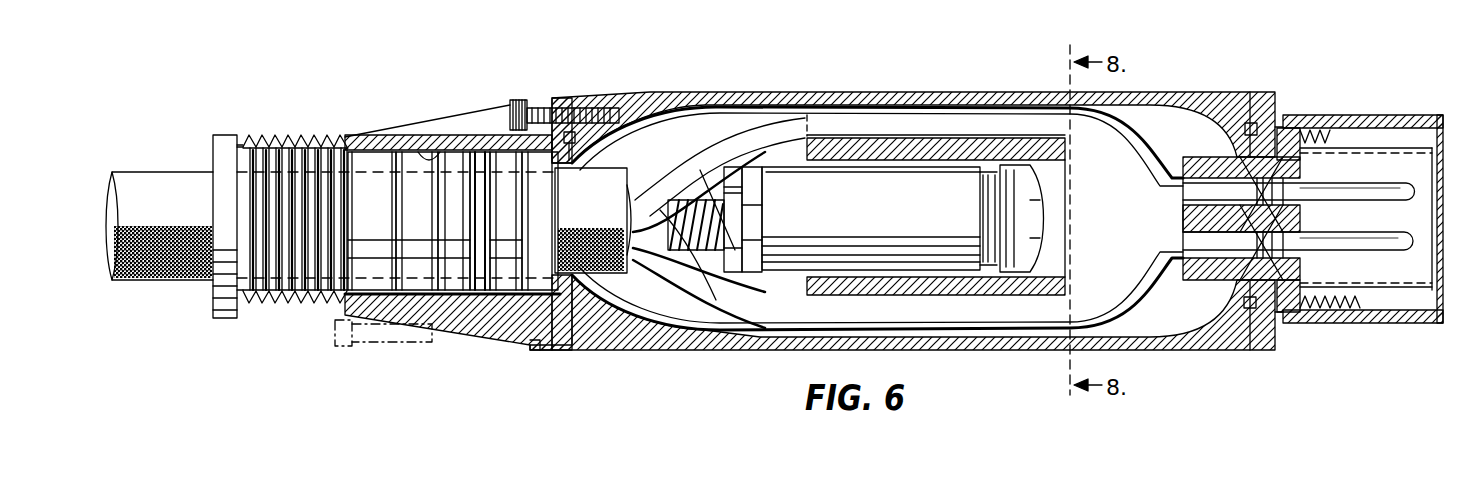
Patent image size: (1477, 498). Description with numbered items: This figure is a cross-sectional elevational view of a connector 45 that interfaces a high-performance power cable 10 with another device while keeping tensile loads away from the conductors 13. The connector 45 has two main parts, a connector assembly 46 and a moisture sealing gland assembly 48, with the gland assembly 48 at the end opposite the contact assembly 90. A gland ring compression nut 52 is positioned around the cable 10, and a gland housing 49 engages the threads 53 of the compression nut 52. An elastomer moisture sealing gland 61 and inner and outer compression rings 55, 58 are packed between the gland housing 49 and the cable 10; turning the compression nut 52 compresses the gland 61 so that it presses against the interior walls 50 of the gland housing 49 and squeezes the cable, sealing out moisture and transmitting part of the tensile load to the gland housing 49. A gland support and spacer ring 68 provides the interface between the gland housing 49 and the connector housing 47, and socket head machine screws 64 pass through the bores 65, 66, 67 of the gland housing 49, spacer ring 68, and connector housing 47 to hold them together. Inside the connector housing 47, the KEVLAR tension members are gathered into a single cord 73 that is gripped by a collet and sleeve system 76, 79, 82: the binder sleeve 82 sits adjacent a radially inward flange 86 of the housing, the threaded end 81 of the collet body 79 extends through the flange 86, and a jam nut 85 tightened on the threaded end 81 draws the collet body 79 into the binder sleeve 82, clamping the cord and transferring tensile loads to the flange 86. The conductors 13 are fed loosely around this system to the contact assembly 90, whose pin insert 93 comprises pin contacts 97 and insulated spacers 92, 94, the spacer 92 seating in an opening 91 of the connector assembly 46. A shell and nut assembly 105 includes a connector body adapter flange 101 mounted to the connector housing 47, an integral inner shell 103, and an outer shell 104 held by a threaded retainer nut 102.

The power cable 10 is at (152, 172).
The conductors 13 is at (692, 158).
The connector 45 is at (570, 103).
The connector assembly 46 is at (877, 96).
The connector housing 47 is at (788, 92).
The moisture sealing gland assembly 48 is at (304, 124).
The gland housing 49 is at (350, 150).
The interior walls 50 is at (426, 152).
The gland ring compression nut 52 is at (213, 284).
The threads 53 is at (290, 306).
The inner compression ring 55 is at (554, 206).
The outer compression ring 58 is at (478, 296).
The moisture sealing gland 61 is at (505, 296).
The socket head machine screws 64 is at (518, 100).
The bore 65 is at (538, 350).
The bore 66 is at (562, 350).
The bore 67 is at (602, 350).
The gland support and spacer ring 68 is at (566, 108).
The cord 73 is at (684, 254).
The collet and sleeve system 76 is at (730, 274).
The collet body 79 is at (754, 274).
The threaded end 81 is at (982, 206).
The binder sleeve 82 is at (888, 216).
The jam nut 85 is at (1022, 277).
The flange 86 is at (988, 136).
The contact assembly 90 is at (1348, 74).
The opening 91 is at (1192, 136).
The insulated spacer 92 is at (1252, 122).
The pin insert 93 is at (1199, 281).
The insulated spacer 94 is at (1294, 128).
The pin contacts 97 is at (1361, 198).
The connector body adapter flange 101 is at (1262, 345).
The threaded retainer nut 102 is at (1332, 310).
The inner shell 103 is at (1441, 323).
The outer shell 104 is at (1396, 323).
The shell and nut assembly 105 is at (1288, 348).